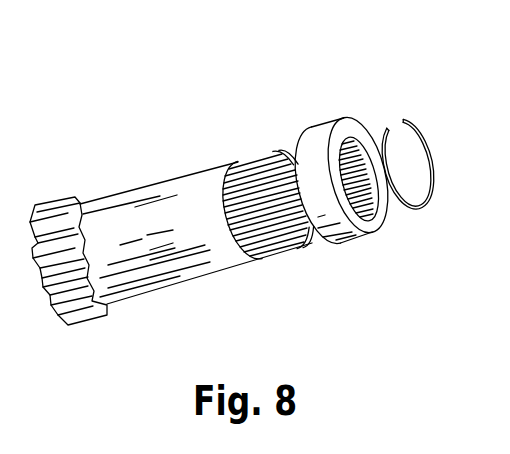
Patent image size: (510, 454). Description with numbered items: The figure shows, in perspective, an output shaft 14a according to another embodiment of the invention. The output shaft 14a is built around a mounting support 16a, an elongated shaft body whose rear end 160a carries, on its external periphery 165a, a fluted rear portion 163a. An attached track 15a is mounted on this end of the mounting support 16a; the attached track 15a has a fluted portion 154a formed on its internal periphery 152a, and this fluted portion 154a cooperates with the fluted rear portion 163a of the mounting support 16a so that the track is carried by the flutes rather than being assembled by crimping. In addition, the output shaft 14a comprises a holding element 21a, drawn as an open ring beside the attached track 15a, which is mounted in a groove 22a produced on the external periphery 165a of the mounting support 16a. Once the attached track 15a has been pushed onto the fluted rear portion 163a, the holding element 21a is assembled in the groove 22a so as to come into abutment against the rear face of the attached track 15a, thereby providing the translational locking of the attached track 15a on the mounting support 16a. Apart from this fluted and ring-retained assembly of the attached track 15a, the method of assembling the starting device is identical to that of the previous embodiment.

The output shaft 14a is at (132, 117).
The mounting support 16a is at (158, 290).
The rear end 160a is at (233, 228).
The groove 22a is at (268, 172).
The fluted rear portion 163a is at (273, 240).
The external periphery 165a is at (292, 249).
The attached track 15a is at (317, 147).
The internal periphery 152a is at (372, 205).
The fluted portion 154a is at (386, 212).
The holding element 21a is at (420, 137).